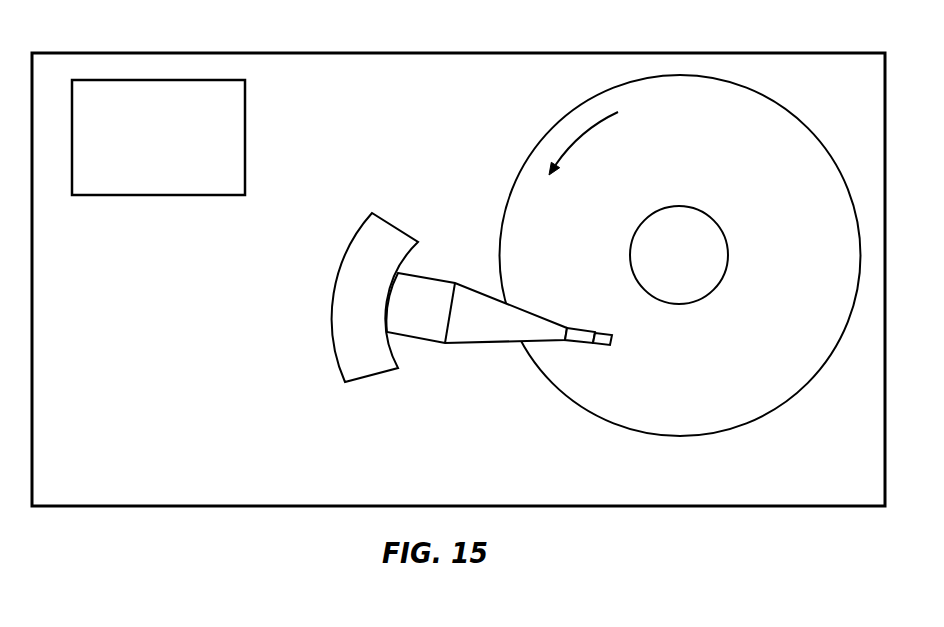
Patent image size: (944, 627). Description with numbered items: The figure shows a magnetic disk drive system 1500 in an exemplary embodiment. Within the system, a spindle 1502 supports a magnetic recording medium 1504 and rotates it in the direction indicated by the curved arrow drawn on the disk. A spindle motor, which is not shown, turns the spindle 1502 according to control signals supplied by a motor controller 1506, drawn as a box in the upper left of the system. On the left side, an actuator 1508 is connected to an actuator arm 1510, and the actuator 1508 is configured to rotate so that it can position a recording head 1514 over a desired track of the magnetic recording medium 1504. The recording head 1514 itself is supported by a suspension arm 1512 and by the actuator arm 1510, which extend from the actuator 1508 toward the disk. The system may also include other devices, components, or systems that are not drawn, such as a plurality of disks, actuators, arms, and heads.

The magnetic disk drive system 1500 is at (415, 496).
The spindle 1502 is at (728, 260).
The magnetic recording medium 1504 is at (727, 147).
The motor controller 1506 is at (183, 177).
The actuator 1508 is at (388, 222).
The actuator arm 1510 is at (458, 345).
The suspension arm 1512 is at (578, 325).
The recording head 1514 is at (614, 343).